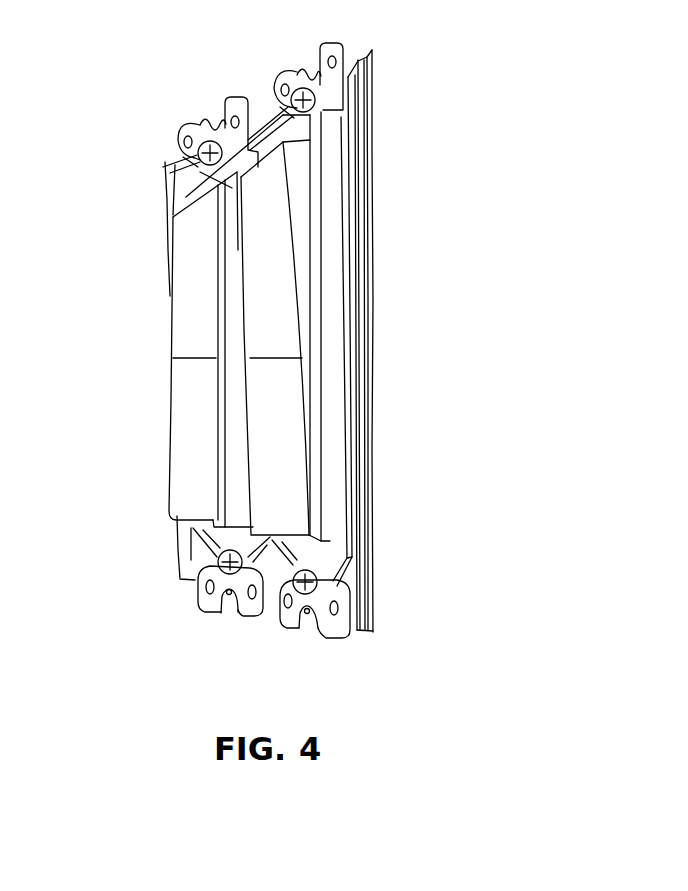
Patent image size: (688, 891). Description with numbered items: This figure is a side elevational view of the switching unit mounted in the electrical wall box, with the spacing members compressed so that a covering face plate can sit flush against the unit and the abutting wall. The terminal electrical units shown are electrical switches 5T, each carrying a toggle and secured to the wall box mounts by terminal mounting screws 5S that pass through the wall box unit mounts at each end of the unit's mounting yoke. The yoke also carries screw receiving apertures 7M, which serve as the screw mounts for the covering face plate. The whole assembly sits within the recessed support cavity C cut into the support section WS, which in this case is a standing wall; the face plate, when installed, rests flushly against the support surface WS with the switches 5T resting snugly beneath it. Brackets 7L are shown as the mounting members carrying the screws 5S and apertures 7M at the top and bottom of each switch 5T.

The support section WS is at (148, 205).
The support cavity C is at (369, 296).
The electrical switch 5T is at (185, 323).
The terminal mounting screw 5S is at (225, 118).
The mounting strap / bracket 7L is at (240, 102).
The screw receiving aperture 7M is at (235, 602).